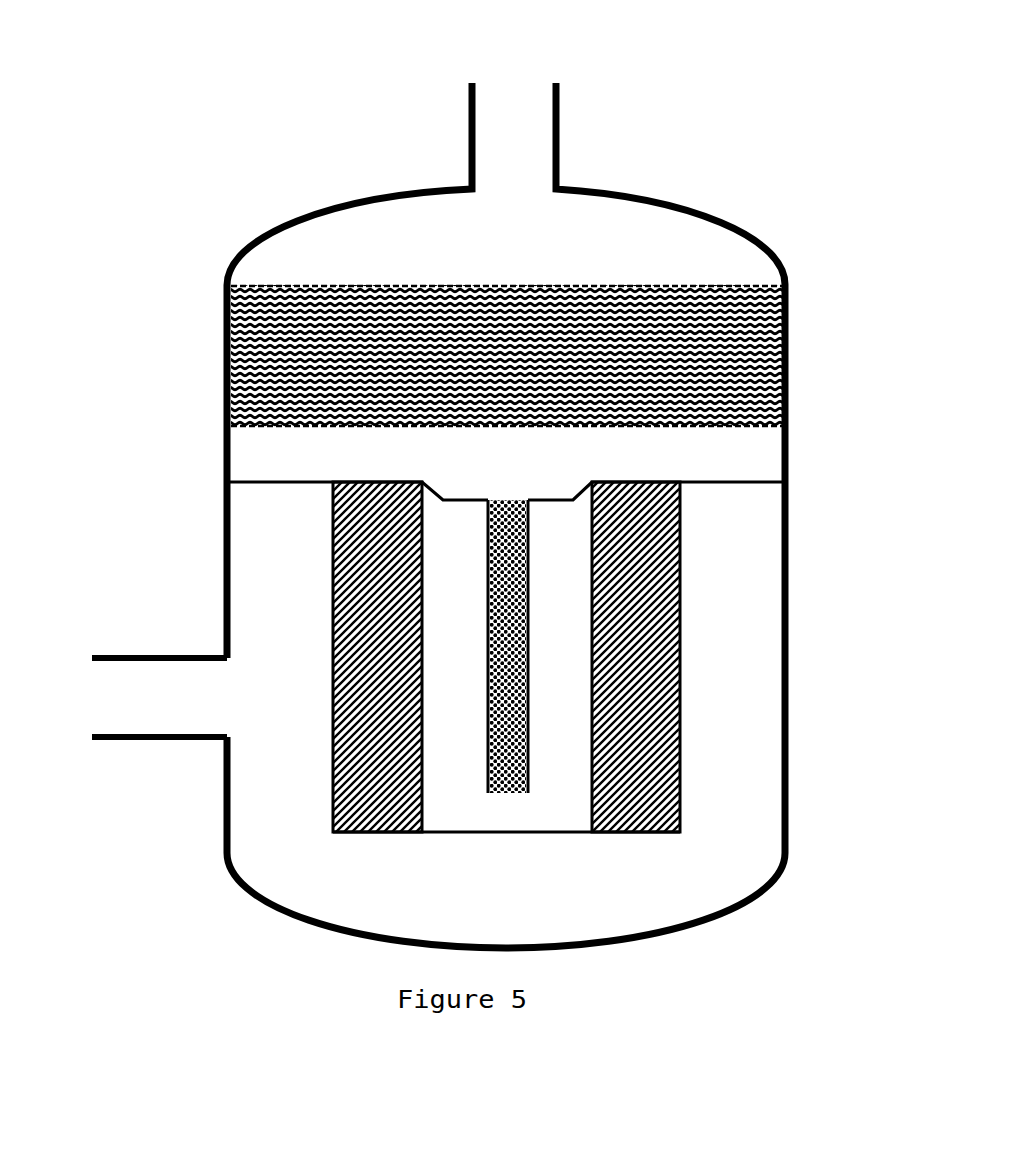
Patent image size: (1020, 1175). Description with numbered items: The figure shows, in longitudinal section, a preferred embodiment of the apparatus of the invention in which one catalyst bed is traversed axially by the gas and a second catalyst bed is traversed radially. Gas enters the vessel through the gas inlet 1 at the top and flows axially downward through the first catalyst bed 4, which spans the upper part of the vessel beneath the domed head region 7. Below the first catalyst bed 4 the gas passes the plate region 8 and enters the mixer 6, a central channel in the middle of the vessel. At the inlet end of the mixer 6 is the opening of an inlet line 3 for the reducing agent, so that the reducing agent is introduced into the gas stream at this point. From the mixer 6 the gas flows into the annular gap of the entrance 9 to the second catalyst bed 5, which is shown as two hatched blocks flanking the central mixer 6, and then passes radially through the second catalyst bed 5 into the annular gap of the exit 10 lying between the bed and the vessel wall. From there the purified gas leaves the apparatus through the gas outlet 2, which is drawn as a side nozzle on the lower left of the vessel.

The gas inlet 1 is at (506, 435).
The gas outlet 2 is at (403, 803).
The inlet line 3 is at (508, 485).
The first catalyst bed 4 is at (506, 356).
The second catalyst bed 5 is at (506, 657).
The mixer 6 is at (519, 806).
The head space 7 is at (760, 263).
The distributor plate 8 is at (560, 467).
The entrance 9 is at (563, 612).
The exit 10 is at (713, 715).